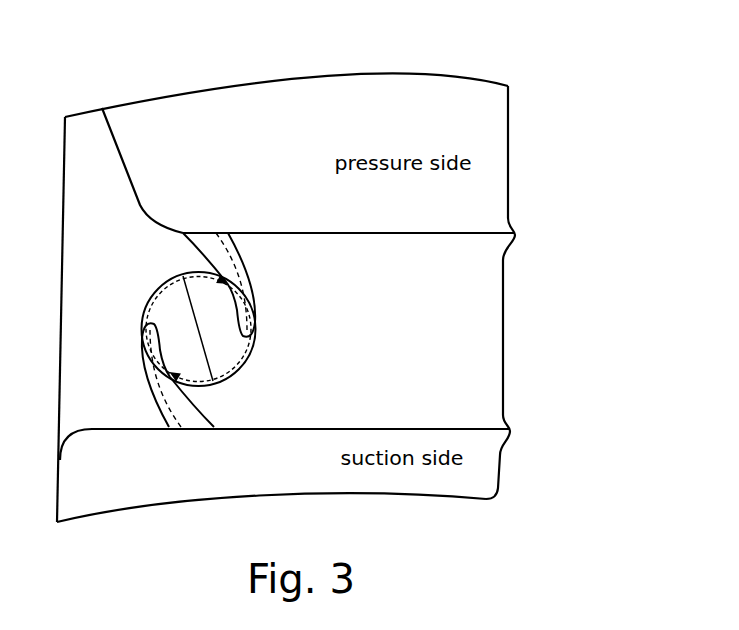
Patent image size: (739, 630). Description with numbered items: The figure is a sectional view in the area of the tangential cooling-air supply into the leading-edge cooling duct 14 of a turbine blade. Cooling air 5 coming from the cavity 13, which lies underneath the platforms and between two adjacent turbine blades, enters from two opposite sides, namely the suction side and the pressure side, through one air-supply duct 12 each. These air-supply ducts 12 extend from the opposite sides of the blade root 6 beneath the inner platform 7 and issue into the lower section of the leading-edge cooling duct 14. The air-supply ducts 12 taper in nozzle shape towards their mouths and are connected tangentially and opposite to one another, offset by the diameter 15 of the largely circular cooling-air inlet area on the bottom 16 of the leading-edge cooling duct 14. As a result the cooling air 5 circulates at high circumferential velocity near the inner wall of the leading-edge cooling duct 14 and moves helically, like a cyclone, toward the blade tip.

The cooling air 5 is at (199, 226).
The blade root 6 is at (487, 329).
The inner platform 7 is at (508, 115).
The air-supply duct 12 is at (250, 275).
The cavity 13 is at (453, 110).
The leading-edge cooling duct 14 is at (167, 282).
The diameter of the leading-edge cooling duct 15 is at (198, 328).
The bottom of the leading-edge cooling duct 16 is at (222, 348).